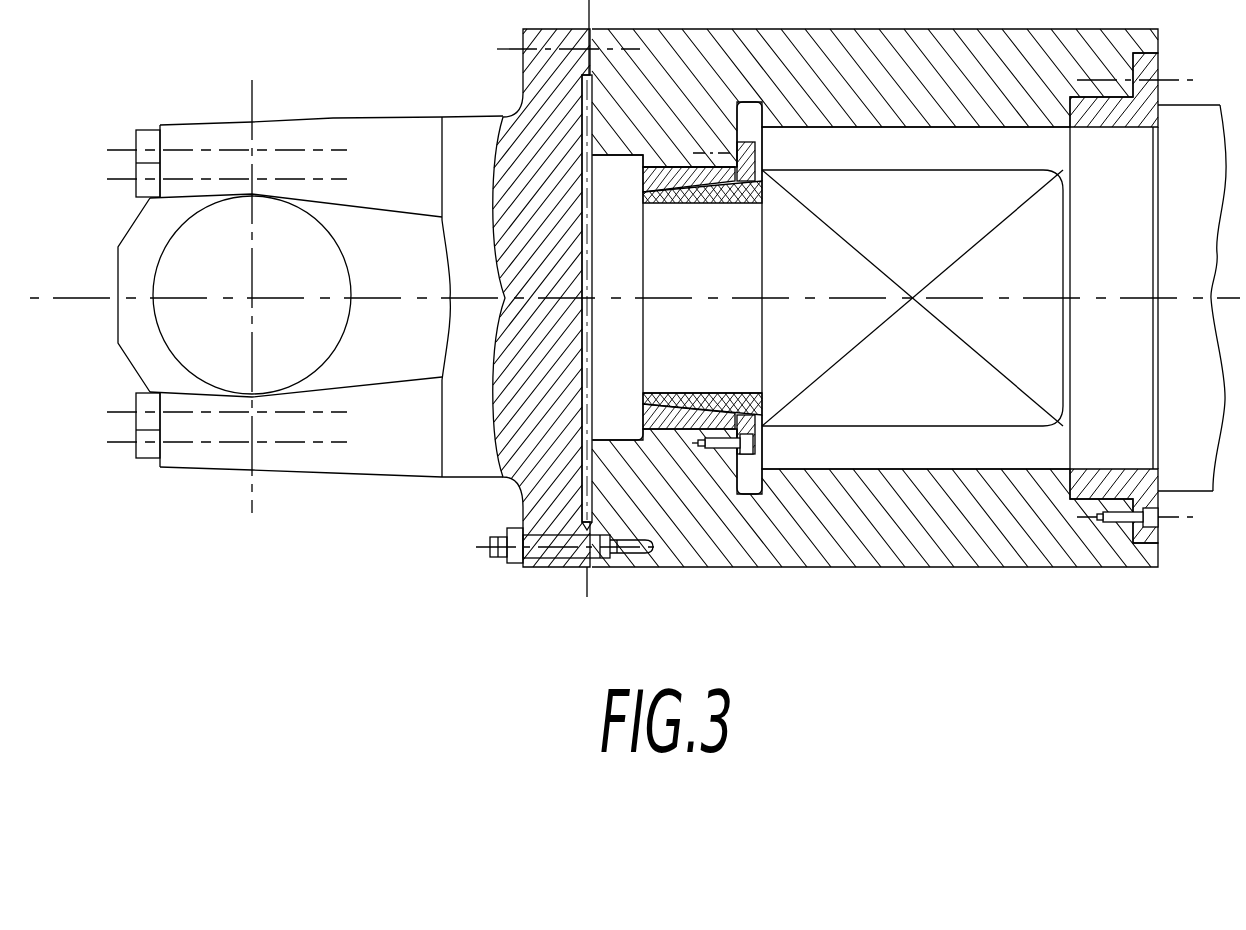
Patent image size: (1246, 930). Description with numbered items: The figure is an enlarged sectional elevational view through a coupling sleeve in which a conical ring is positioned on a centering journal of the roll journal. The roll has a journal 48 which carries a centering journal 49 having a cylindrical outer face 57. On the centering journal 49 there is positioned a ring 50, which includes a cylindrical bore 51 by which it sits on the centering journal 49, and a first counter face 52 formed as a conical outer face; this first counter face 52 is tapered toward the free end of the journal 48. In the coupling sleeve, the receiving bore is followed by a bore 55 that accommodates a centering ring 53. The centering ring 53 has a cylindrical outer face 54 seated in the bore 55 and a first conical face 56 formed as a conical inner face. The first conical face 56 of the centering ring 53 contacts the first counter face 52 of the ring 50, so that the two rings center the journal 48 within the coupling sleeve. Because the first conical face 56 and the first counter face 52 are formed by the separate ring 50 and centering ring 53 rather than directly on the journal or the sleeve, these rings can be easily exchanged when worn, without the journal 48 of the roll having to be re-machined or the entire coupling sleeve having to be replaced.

The journal 48 is at (945, 453).
The centering journal 49 is at (656, 283).
The ring 50 is at (685, 393).
The cylindrical bore 51 is at (662, 393).
The first counter face 52 is at (716, 412).
The centering ring 53 is at (702, 298).
The cylindrical outer face 54 is at (707, 200).
The bore 55 is at (670, 170).
The first conical face 56 is at (737, 205).
The cylindrical outer face 57 is at (737, 410).